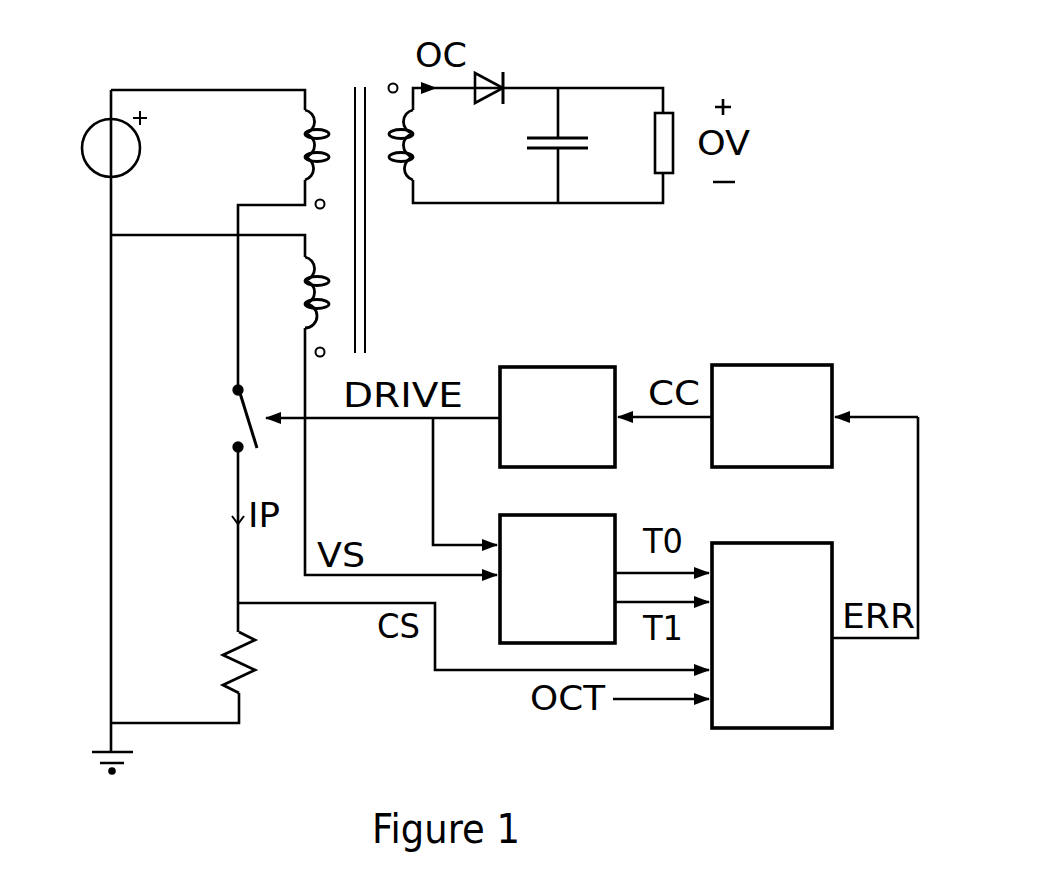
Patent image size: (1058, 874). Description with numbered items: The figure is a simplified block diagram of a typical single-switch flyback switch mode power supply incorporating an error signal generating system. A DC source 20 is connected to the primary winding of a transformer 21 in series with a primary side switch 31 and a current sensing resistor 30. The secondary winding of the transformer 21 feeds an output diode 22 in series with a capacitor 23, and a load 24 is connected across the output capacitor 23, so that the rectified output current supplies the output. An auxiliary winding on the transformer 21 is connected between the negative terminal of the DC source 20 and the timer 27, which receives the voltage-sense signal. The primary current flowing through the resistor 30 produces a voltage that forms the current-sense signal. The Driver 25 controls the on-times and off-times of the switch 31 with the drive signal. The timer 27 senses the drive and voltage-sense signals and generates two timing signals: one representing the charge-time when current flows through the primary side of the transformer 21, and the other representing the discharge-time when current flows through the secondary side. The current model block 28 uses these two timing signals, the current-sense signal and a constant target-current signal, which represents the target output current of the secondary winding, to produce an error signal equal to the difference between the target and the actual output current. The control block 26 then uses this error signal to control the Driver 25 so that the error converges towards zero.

The DC source 20 is at (91, 144).
The transformer 21 is at (359, 200).
The output diode 22 is at (511, 70).
The capacitor 23 is at (539, 164).
The load 24 is at (639, 152).
The Driver 25 is at (557, 395).
The control block 26 is at (772, 396).
The timer 27 is at (557, 557).
The current model block 28 is at (772, 614).
The current sensing resistor 30 is at (260, 662).
The primary side switch 31 is at (224, 418).